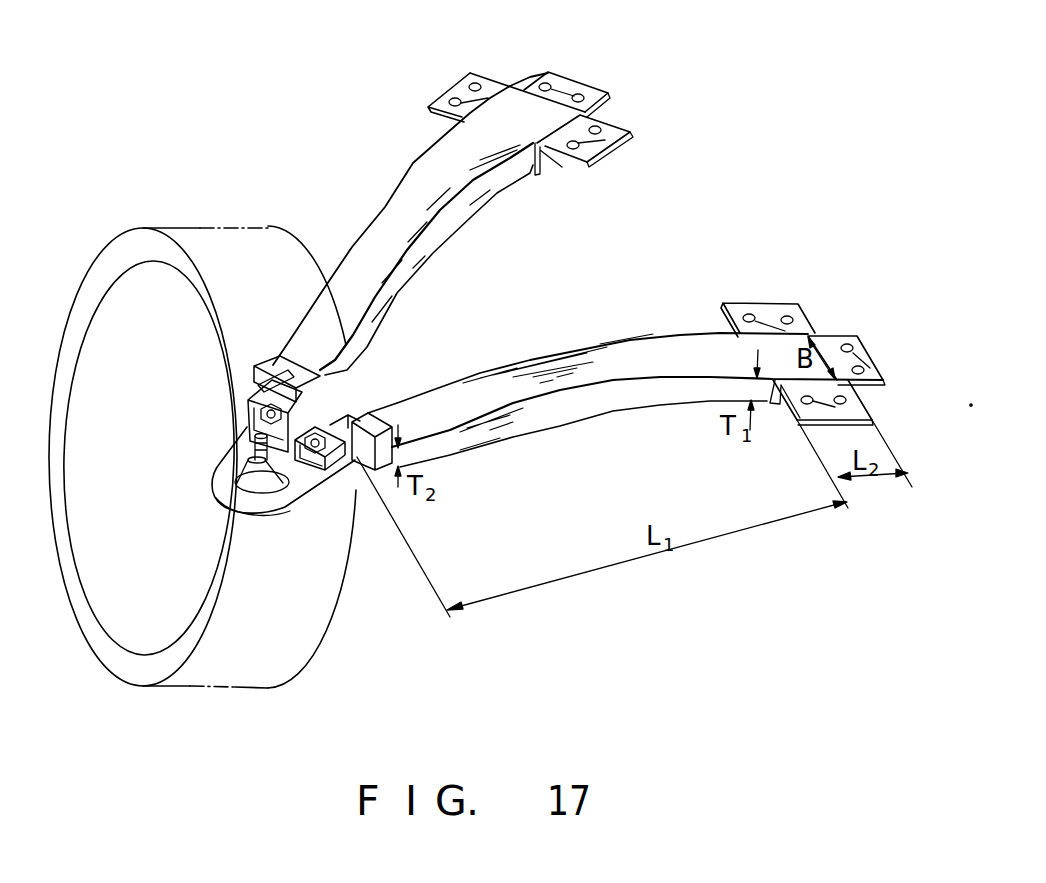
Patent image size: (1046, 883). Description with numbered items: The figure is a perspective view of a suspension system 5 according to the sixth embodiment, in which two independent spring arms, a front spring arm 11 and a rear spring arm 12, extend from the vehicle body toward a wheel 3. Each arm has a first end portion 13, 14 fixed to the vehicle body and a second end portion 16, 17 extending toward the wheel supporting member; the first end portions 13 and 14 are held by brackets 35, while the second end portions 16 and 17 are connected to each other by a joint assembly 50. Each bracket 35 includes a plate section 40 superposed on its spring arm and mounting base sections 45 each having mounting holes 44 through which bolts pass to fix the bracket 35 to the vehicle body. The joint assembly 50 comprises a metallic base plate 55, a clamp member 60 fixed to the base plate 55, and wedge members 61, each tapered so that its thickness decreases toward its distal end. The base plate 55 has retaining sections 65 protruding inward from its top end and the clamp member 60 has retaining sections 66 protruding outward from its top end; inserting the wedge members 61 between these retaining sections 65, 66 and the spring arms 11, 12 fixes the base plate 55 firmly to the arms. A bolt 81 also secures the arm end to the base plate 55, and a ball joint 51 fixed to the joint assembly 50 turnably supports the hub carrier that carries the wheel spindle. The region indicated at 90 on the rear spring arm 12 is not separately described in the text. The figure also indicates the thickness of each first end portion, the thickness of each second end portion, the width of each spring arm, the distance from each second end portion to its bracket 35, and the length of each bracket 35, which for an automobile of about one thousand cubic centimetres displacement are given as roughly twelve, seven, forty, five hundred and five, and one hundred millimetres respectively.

The wheel 3 is at (96, 655).
The suspension system 5 is at (350, 116).
The front spring arm 11 is at (388, 212).
The rear spring arm 12 is at (600, 347).
The first end portion 13 is at (515, 120).
The first end portion 14 is at (770, 343).
The second end portion 16 is at (252, 410).
The second end portion 17 is at (307, 493).
The bracket 35 is at (610, 171).
The plate section 40 is at (562, 165).
The mounting holes 44 is at (478, 84).
The mounting base sections 45 is at (455, 96).
The joint assembly 50 is at (203, 492).
The ball joint 51 is at (247, 475).
The metallic base plate 55 is at (378, 484).
The clamp member 60 is at (352, 415).
The wedge members 61 is at (257, 398).
The retaining sections 65 is at (265, 362).
The retaining sections 66 is at (305, 392).
The bolt 81 is at (258, 420).
The reinforcing ribs / shading of arm 90 is at (627, 420).